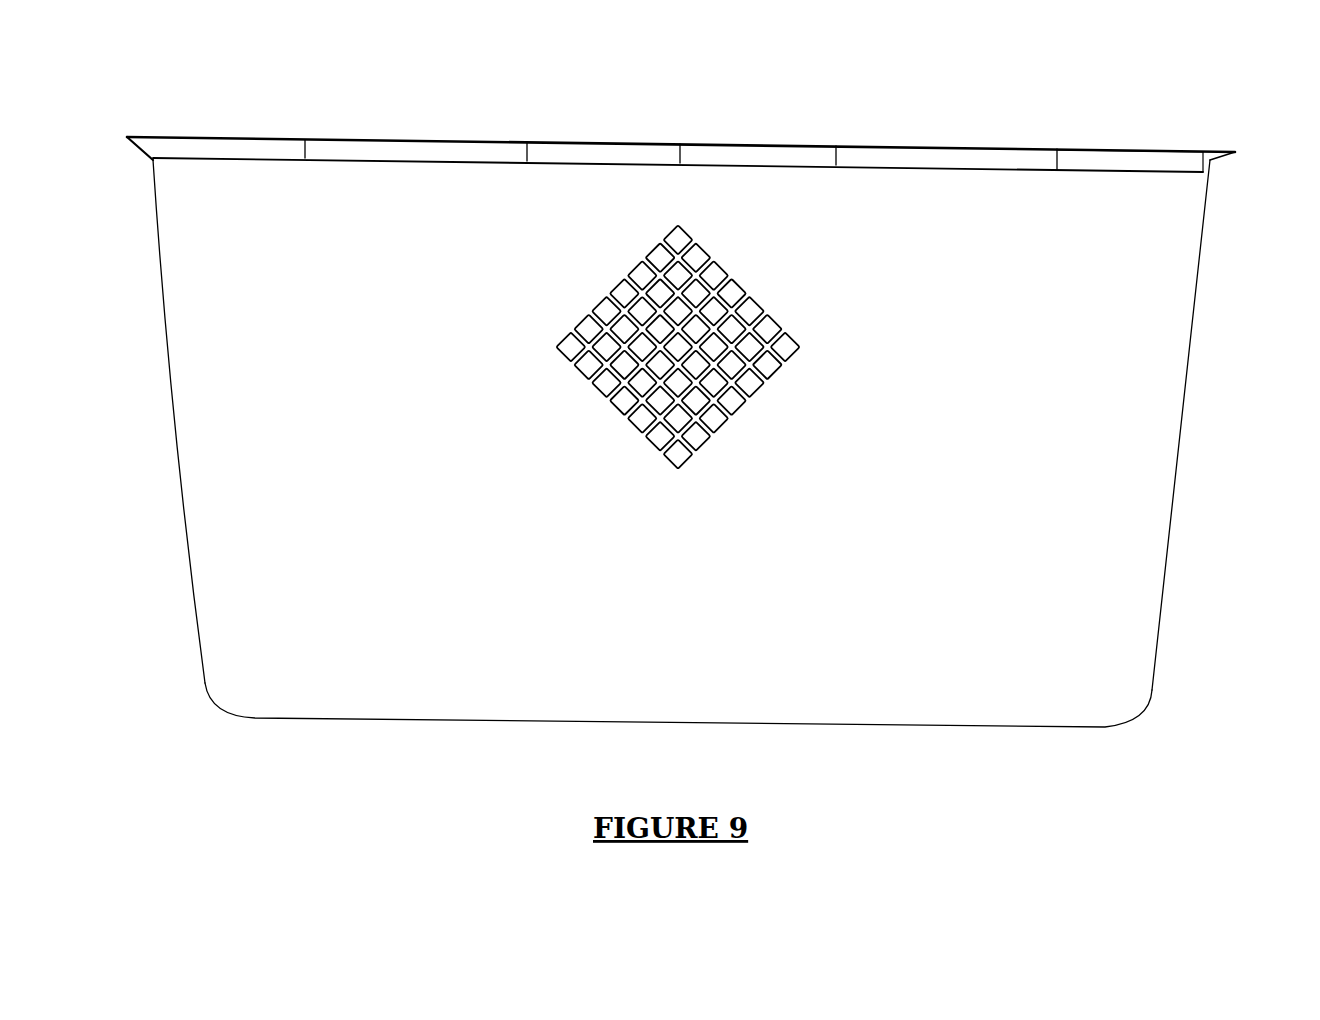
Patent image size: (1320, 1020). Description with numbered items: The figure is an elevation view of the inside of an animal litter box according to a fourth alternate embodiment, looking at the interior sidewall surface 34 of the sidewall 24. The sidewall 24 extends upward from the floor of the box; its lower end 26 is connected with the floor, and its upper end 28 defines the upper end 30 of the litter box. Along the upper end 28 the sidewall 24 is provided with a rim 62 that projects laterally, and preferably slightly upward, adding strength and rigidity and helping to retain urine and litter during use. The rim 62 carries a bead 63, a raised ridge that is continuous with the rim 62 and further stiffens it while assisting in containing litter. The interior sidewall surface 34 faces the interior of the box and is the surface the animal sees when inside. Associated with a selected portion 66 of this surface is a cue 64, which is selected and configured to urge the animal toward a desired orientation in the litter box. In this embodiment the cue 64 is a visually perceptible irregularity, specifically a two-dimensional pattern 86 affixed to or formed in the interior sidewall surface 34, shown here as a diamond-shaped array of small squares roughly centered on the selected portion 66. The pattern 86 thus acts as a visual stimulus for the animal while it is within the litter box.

The sidewall 24 is at (1152, 420).
The lower end 26 is at (1125, 697).
The upper end 28 is at (1195, 182).
The upper end of the litter box 30 is at (992, 150).
The interior sidewall surface 34 is at (230, 463).
The rim 62 is at (1122, 158).
The bead 63 is at (1198, 152).
The cue 64 is at (636, 240).
The selected portion 66 is at (608, 455).
The two-dimensional pattern 86 is at (757, 287).